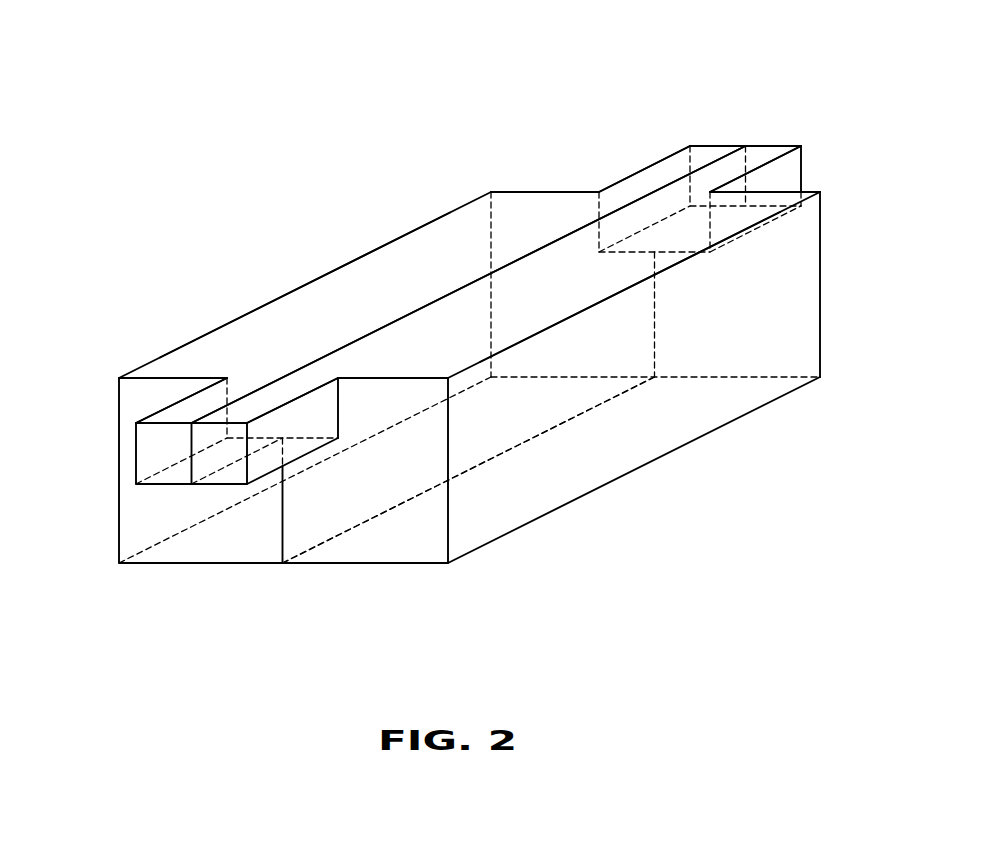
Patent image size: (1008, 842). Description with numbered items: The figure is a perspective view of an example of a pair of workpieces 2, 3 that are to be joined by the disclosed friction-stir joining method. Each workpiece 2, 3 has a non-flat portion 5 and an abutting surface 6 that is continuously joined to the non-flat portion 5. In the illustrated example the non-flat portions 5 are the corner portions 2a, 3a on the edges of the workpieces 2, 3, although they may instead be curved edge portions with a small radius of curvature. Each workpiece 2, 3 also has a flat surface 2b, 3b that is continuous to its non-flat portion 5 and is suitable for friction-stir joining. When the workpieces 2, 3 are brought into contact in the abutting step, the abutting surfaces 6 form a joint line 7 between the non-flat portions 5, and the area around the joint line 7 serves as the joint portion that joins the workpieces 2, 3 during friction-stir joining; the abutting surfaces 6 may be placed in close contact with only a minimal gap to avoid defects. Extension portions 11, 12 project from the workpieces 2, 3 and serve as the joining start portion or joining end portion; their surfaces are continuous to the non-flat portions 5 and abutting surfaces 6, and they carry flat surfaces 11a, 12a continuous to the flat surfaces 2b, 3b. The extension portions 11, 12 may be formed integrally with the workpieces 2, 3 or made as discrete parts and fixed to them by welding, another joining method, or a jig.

The workpiece 2 is at (305, 285).
The corner portion 2a is at (528, 152).
The flat surface 2b is at (283, 347).
The workpiece 3 is at (600, 486).
The corner portion 3a is at (603, 273).
The flat surface 3b is at (537, 267).
The non-flat portion 5 is at (155, 380).
The abutting surface 6 is at (490, 458).
The joint line 7 is at (433, 301).
The extension portion 11 is at (133, 442).
The flat surface 11a is at (257, 403).
The extension portion 12 is at (772, 146).
The flat surface 12a is at (728, 173).